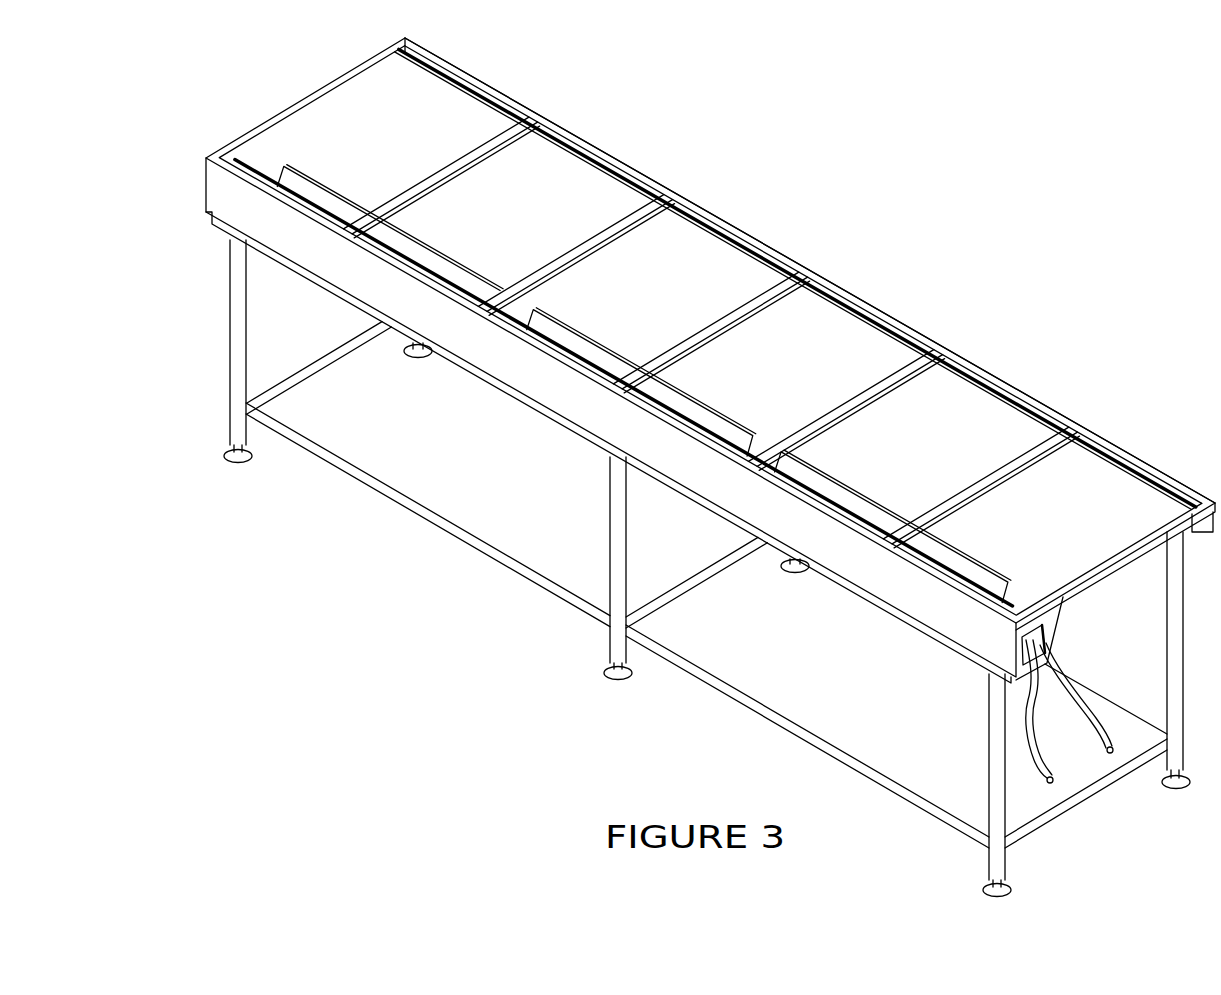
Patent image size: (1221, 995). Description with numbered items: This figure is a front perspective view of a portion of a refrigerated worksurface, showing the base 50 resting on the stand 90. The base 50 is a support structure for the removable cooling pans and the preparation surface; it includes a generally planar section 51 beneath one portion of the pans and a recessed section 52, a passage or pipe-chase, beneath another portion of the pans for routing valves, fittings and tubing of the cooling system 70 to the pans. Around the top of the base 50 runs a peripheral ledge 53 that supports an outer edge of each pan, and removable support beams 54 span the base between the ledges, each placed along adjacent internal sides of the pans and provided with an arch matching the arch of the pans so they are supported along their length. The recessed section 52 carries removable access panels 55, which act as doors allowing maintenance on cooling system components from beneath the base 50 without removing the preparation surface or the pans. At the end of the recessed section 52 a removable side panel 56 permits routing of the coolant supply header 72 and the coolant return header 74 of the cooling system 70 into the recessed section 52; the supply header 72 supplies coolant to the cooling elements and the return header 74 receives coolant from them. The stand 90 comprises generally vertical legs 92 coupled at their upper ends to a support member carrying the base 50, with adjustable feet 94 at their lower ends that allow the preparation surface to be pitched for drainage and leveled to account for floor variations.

The base 50 is at (532, 380).
The generally planar section 51 is at (735, 276).
The recessed section 52 is at (263, 167).
The peripheral ledge 53 is at (460, 76).
The support beams 54 is at (534, 127).
The removable access panels 55 is at (288, 186).
The removable side panels 56 is at (1050, 632).
The cooling system 70 is at (1030, 760).
The supply header 72 is at (1047, 783).
The return header 74 is at (1106, 752).
The stand 90 is at (568, 637).
The legs 92 is at (234, 352).
The feet 94 is at (232, 462).